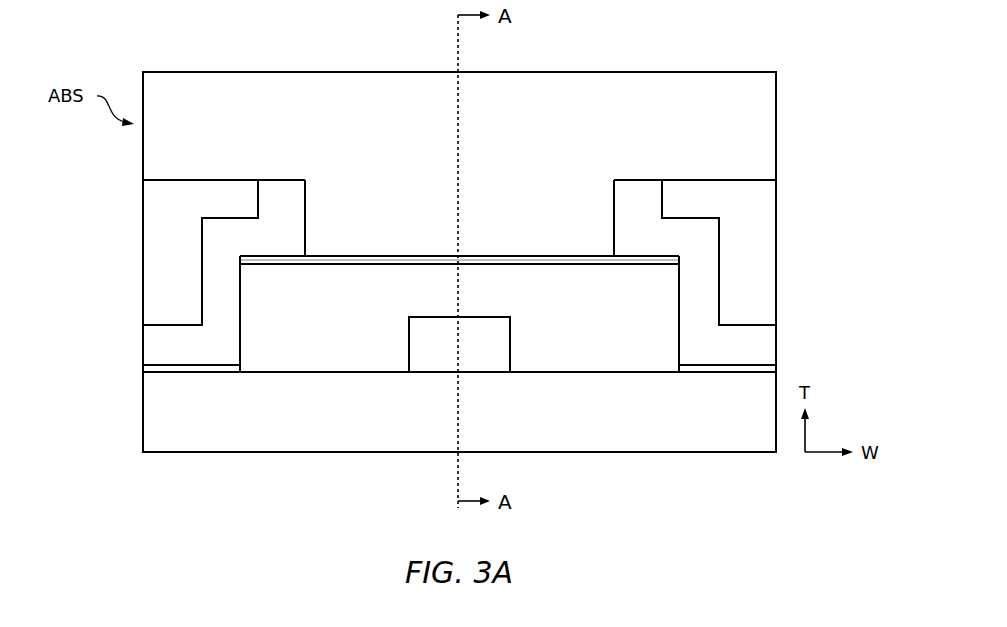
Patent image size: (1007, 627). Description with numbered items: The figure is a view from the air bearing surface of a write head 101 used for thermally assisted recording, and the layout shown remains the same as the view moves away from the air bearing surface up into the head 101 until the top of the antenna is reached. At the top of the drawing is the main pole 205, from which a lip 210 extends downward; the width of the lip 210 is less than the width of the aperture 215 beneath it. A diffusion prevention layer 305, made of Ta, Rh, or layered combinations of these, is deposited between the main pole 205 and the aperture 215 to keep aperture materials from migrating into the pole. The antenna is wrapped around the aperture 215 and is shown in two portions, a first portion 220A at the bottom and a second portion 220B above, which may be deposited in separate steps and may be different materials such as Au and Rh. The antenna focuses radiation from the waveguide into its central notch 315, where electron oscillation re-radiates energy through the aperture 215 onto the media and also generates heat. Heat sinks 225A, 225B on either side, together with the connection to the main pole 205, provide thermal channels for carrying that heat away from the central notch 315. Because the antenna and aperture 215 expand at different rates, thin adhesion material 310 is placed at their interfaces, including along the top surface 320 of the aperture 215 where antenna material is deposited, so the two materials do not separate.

The head 101 is at (754, 52).
The main pole 205 is at (297, 140).
The lip 210 is at (484, 206).
The aperture 215 is at (615, 328).
The first portion 220A is at (339, 418).
The second portion 220B is at (282, 244).
The heat sink 225A is at (184, 210).
The heat sink 225B is at (758, 210).
The diffusion prevention layer 305 is at (430, 256).
The adhesion material 310 is at (240, 260).
The central notch 315 is at (485, 352).
The top surface 320 is at (270, 270).